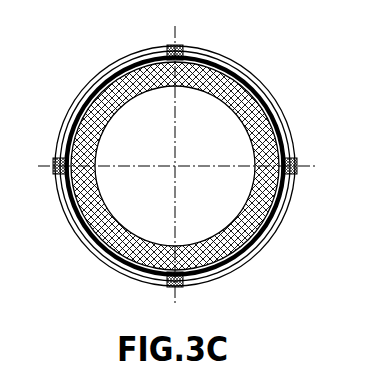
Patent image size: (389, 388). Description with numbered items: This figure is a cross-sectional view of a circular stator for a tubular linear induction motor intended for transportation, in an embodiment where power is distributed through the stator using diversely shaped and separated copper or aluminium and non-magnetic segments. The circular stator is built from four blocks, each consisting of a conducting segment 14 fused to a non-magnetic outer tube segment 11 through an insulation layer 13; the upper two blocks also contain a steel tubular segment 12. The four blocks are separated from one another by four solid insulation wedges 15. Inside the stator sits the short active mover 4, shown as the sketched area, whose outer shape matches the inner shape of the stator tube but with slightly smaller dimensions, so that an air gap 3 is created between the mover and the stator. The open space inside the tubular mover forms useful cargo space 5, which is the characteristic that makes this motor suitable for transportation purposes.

The non-magnetic outer tube segment 11 is at (240, 65).
The steel tubular segment 12 is at (264, 90).
The insulation layer 13 is at (270, 114).
The conducting segment 14 is at (292, 139).
The solid insulation wedge 15 is at (297, 164).
The air gap 3 is at (290, 185).
The mover 4 is at (280, 210).
The cargo space 5 is at (203, 235).